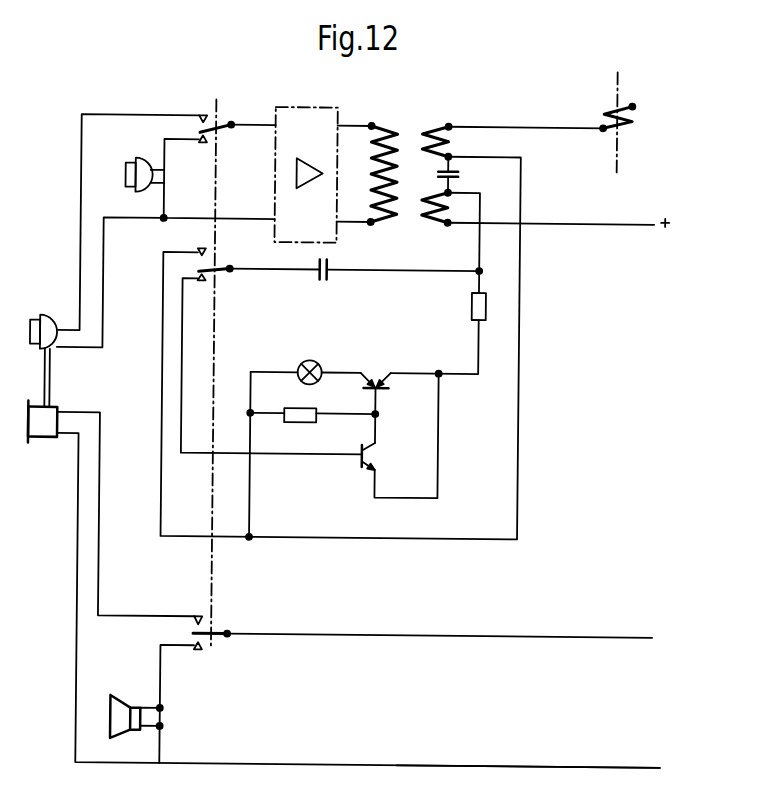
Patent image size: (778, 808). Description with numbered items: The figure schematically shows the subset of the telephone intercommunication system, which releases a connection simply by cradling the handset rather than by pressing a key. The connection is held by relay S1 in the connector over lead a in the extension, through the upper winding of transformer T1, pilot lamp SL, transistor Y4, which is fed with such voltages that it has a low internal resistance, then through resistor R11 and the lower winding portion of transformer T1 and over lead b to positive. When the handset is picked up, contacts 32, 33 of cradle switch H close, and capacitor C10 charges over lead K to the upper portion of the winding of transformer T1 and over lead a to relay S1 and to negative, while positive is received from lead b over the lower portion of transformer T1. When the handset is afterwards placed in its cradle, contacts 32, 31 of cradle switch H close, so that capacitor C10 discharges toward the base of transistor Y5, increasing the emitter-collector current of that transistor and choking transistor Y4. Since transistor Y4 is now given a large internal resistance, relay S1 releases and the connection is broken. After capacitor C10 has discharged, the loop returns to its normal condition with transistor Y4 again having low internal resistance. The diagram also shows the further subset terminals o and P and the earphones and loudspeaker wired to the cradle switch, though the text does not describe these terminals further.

The contact 31 is at (272, 364).
The contact 32 is at (220, 263).
The contact 33 is at (203, 247).
The cradle switch H is at (235, 361).
The lead K is at (332, 348).
The relay S1 is at (618, 115).
The transformer T1 is at (413, 160).
The capacitor C10 is at (355, 281).
The resistor R11 is at (439, 322).
The pilot lamp SL is at (306, 363).
The transistor Y4 is at (375, 398).
The transistor Y5 is at (381, 456).
The lead a is at (526, 122).
The lead b is at (559, 216).
The terminal o is at (422, 635).
The terminal P is at (528, 759).